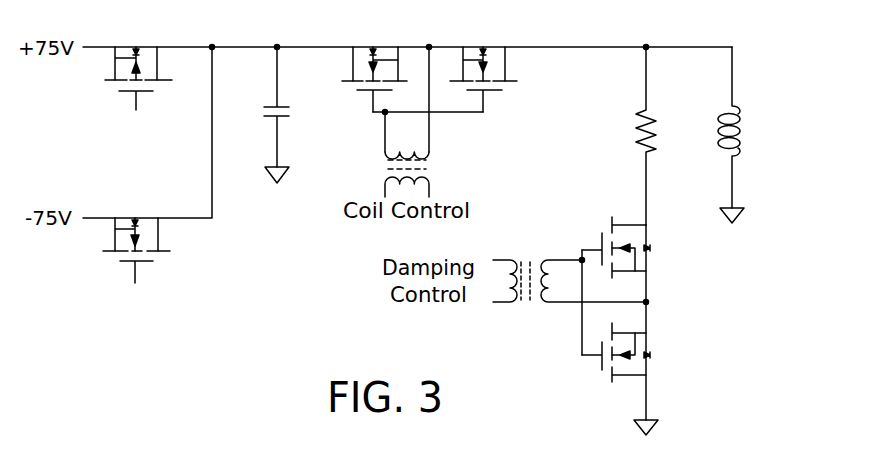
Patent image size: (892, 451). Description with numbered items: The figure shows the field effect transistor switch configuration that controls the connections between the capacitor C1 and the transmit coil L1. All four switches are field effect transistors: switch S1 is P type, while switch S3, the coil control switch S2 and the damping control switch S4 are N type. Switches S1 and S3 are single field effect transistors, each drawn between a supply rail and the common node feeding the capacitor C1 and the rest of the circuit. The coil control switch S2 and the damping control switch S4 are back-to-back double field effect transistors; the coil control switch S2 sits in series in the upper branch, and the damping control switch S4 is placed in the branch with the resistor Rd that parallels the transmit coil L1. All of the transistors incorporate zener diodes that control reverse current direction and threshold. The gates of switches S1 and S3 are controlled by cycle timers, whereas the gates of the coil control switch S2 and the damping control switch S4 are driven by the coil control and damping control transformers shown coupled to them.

The switch S1 is at (138, 62).
The coil control switch S2 is at (429, 63).
The switch S3 is at (136, 233).
The damping control switch S4 is at (636, 326).
The capacitor C1 is at (293, 115).
The damping resistor Rd is at (663, 136).
The transmit coil L1 is at (772, 135).